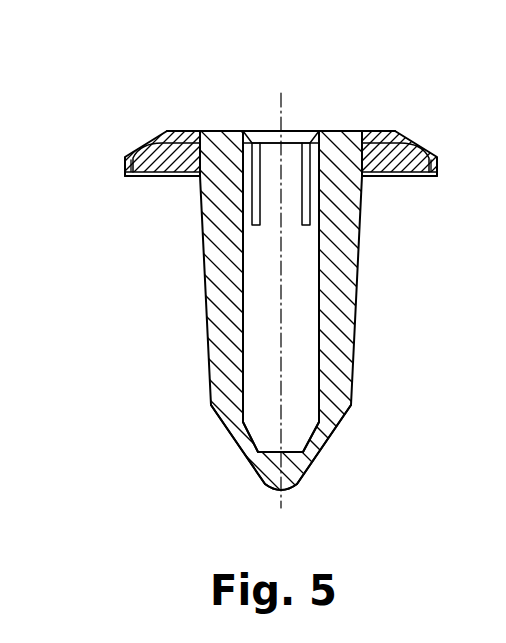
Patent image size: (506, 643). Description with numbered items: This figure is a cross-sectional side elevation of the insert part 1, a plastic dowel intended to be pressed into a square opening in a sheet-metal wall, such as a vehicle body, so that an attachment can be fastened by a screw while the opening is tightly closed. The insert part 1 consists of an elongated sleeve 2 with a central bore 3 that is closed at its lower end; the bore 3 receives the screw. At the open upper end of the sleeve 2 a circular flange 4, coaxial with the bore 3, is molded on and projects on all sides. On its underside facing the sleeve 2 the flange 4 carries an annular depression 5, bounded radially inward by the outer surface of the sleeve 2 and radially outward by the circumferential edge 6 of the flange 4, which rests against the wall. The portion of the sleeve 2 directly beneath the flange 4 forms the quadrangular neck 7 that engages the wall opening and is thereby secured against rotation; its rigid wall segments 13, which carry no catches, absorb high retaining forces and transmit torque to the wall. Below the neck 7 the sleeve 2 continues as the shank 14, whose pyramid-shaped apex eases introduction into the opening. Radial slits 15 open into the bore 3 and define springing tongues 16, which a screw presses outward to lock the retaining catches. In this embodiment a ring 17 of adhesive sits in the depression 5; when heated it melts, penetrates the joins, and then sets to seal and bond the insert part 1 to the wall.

The insert part 1 is at (136, 105).
The sleeve 2 is at (360, 306).
The central bore 3 is at (257, 288).
The flange 4 is at (385, 131).
The annular depression 5 is at (192, 173).
The circumferential edge 6 is at (124, 173).
The neck 7 is at (363, 190).
The wall segments 13 is at (218, 162).
The shank 14 is at (355, 387).
The radial slits 15 is at (264, 157).
The tongues 16 is at (286, 153).
The ring of adhesive 17 is at (413, 150).